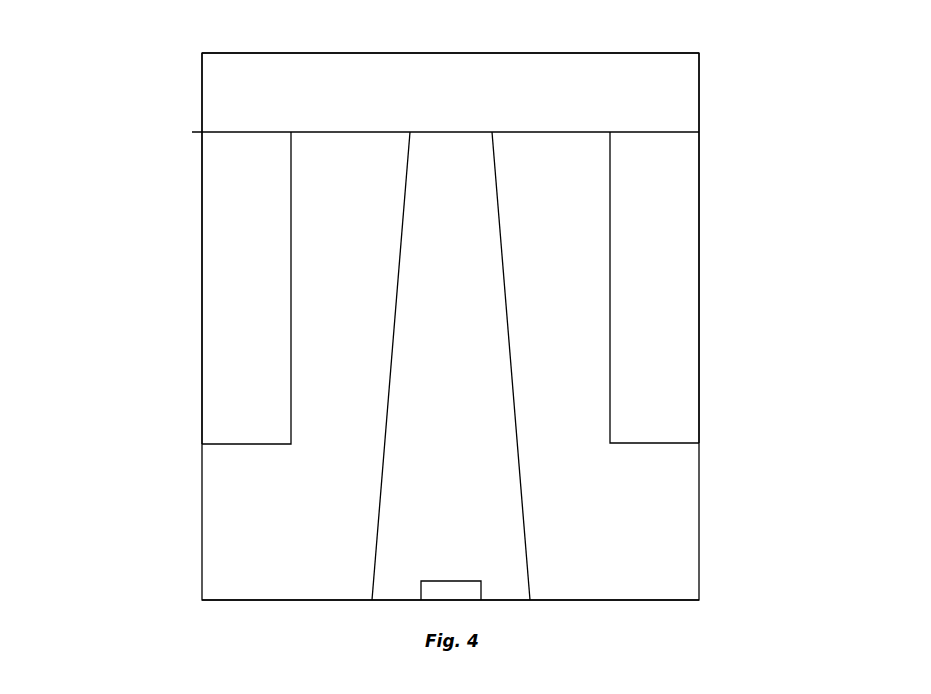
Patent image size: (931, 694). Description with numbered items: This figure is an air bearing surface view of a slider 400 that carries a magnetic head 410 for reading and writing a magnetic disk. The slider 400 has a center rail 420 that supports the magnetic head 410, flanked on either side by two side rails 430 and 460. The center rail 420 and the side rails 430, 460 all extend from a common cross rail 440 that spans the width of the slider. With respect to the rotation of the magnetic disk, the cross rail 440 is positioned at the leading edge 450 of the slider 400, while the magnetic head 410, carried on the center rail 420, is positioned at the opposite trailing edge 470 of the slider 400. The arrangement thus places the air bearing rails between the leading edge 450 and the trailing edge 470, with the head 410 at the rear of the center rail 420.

The slider 400 is at (70, 553).
The magnetic head 410 is at (439, 591).
The center rail 420 is at (420, 434).
The side rail 430 is at (240, 259).
The cross rail 440 is at (242, 83).
The leading edge 450 is at (268, 53).
The side rail 460 is at (679, 278).
The trailing edge 470 is at (610, 601).